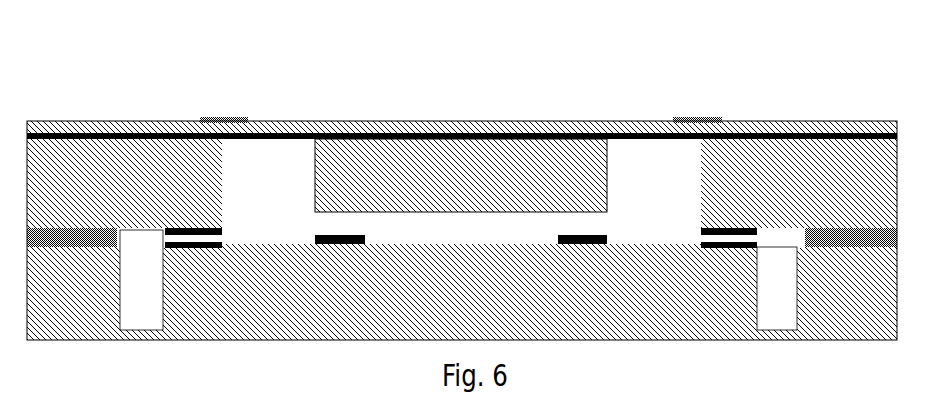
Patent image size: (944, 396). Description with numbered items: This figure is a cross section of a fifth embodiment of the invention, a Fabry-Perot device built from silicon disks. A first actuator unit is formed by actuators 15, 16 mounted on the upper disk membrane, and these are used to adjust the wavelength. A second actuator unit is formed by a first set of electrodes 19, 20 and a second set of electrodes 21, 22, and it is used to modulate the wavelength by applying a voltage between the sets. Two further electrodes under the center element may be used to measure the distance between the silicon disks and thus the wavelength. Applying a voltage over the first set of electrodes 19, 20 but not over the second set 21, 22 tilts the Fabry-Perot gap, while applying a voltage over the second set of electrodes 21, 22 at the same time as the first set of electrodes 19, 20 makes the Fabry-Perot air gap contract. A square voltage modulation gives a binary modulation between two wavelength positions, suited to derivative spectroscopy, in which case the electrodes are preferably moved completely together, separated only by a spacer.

The actuator 15 is at (223, 107).
The actuator 16 is at (705, 115).
The electrode 19 is at (163, 247).
The electrode 20 is at (223, 227).
The electrode 21 is at (698, 220).
The electrode 22 is at (757, 248).